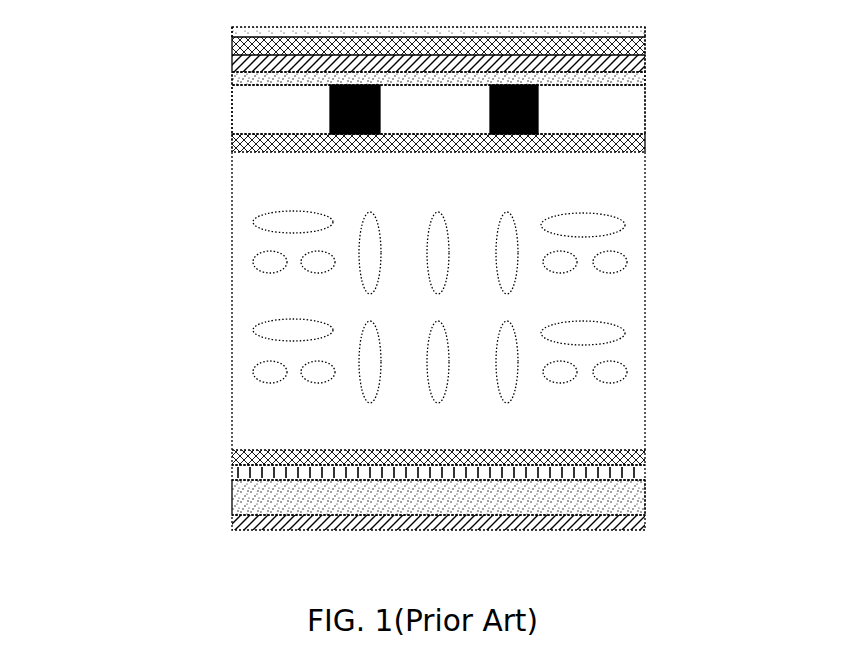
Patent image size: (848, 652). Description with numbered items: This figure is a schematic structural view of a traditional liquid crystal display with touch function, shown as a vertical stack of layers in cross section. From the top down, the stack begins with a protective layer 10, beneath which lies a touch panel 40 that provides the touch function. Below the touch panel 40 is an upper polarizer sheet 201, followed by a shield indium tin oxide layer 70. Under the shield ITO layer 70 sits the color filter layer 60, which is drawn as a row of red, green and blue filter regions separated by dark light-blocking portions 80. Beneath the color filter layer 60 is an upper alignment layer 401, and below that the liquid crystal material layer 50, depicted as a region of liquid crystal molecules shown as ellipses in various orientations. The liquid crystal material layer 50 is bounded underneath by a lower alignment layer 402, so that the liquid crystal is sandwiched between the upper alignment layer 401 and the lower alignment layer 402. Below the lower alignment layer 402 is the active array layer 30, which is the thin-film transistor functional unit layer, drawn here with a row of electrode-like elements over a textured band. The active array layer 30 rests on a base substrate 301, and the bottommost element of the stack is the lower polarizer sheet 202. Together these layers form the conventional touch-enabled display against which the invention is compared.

The protective layer 10 is at (645, 27).
The touch panel 40 is at (645, 50).
The shield indium tin oxide (ITO) layer 70 is at (645, 70).
The color filter layer 60 is at (622, 105).
The black matrix 80 is at (342, 152).
The upper alignment layer 401 is at (232, 147).
The upper polarizer sheet 201 is at (232, 70).
The liquid crystal material layer 50 is at (577, 300).
The lower alignment layer 402 is at (232, 457).
The active array (thin-film transistor (TFT) functional unit) layer 30 is at (232, 478).
The base substrate 301 is at (645, 506).
The lower polarizer sheet 202 is at (645, 524).